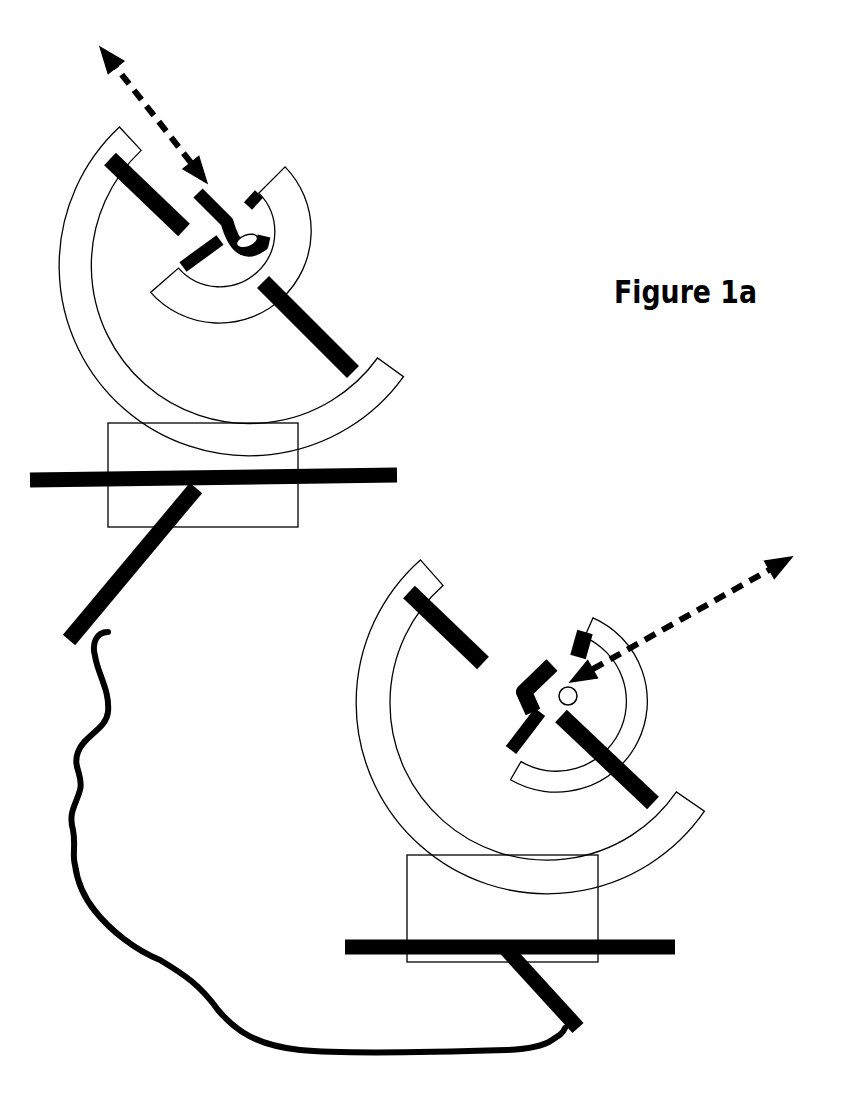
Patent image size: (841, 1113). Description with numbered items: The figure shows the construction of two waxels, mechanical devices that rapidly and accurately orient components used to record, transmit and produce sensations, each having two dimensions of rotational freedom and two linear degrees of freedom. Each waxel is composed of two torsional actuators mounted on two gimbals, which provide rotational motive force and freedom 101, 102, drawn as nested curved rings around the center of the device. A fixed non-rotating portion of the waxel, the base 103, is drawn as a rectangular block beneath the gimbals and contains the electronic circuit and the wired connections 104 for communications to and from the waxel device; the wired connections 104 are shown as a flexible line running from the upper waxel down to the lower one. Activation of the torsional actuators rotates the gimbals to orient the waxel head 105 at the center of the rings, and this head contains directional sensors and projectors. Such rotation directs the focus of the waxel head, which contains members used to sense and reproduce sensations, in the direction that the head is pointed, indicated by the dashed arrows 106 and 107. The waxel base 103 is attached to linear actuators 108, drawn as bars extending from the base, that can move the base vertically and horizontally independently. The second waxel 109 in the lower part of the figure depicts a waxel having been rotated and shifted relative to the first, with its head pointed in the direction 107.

The torsional actuator gimbal 101 is at (347, 264).
The torsional actuator gimbal 102 is at (355, 327).
The base 103 is at (213, 496).
The wired connections 104 is at (293, 842).
The waxel head 105 is at (233, 178).
The pointing direction 106 is at (135, 94).
The pointing direction 107 is at (681, 612).
The linear actuators 108 is at (115, 564).
The second waxel 109 is at (615, 988).